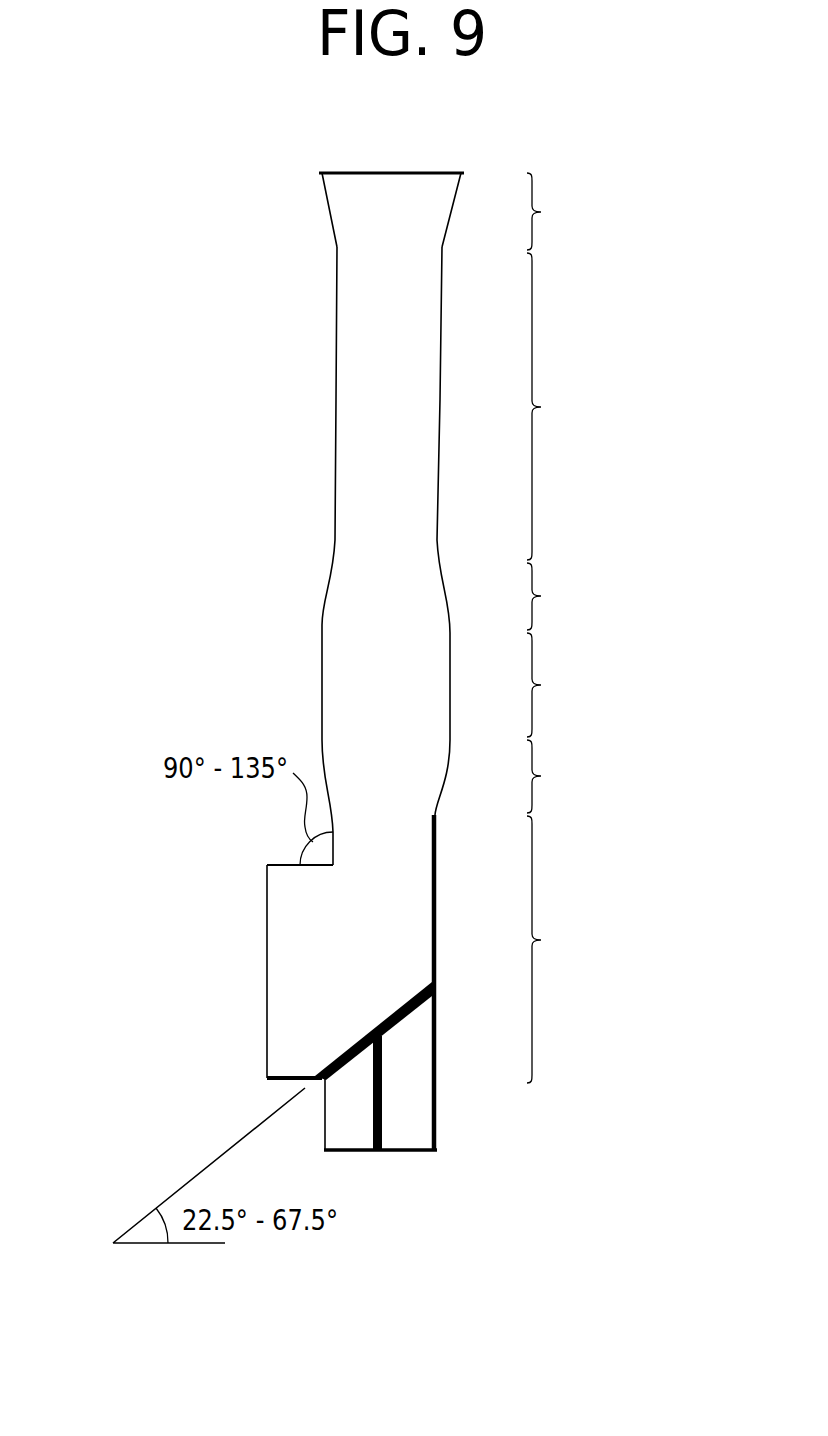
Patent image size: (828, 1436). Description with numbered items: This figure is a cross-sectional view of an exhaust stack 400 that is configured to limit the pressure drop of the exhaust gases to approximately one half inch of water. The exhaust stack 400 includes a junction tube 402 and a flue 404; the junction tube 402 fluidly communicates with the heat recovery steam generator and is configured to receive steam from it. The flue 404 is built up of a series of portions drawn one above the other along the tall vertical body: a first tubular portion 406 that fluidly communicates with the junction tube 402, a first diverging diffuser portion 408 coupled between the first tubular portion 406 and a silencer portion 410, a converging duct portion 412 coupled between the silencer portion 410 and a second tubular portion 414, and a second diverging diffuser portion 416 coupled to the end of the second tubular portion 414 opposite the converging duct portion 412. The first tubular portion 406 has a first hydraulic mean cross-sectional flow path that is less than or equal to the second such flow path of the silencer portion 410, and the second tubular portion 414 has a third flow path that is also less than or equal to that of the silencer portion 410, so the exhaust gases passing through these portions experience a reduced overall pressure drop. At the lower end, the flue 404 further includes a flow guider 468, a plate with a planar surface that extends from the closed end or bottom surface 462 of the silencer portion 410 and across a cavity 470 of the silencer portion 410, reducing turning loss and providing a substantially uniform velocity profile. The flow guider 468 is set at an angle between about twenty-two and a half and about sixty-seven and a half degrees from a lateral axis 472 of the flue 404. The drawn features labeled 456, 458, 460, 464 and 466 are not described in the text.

The exhaust stack 400 is at (292, 695).
The junction tube 402 is at (267, 864).
The flue 404 is at (310, 197).
The first tubular portion 406 is at (560, 949).
The first diverging diffuser portion 408 is at (560, 776).
The silencer portion 410 is at (560, 685).
The converging duct portion 412 is at (560, 596).
The second tubular portion 414 is at (560, 406).
The second diverging diffuser portion 416 is at (560, 211).
The shoulder surface 456 is at (278, 863).
The lower corner 458 is at (265, 1080).
The neck wall 460 is at (335, 838).
The closed end 462 is at (436, 1084).
The outer side wall 464 is at (337, 322).
The top edge 466 is at (390, 172).
The flow guider 468 is at (407, 1013).
The cavity 470 is at (370, 1002).
The lateral axis 472 is at (187, 1244).